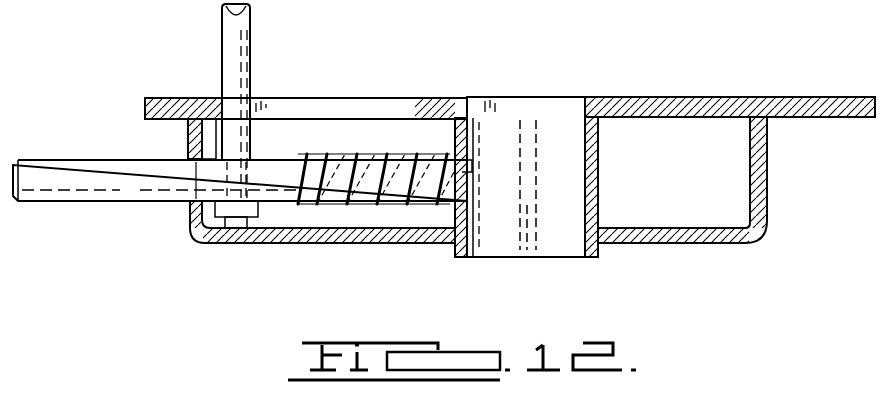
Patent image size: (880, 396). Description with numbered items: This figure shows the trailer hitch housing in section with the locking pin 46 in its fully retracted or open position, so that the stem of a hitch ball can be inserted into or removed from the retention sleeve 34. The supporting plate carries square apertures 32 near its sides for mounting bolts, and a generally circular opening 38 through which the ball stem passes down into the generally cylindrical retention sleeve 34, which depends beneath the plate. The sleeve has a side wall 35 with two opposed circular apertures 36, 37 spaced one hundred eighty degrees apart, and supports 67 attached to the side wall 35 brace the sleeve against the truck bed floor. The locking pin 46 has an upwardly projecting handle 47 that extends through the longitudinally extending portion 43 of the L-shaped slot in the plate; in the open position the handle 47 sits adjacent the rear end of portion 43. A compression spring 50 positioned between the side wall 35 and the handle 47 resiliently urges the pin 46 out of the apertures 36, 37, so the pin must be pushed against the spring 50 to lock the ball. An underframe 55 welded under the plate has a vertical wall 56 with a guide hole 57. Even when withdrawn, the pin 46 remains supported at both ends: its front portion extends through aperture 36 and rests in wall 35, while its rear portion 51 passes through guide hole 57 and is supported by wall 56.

The square apertures 32 is at (700, 97).
The retention sleeve 34 is at (597, 250).
The side wall 35 is at (598, 136).
The aperture 36 is at (468, 163).
The aperture 37 is at (590, 184).
The circular opening 38 is at (569, 103).
The longitudinally extending portion 43 is at (295, 106).
The locking pin 46 is at (110, 205).
The handle 47 is at (227, 31).
The compression spring 50 is at (386, 162).
The rear portion 51 is at (42, 205).
The underframe 55 is at (291, 243).
The vertical wall 56 is at (187, 136).
The guide hole 57 is at (180, 174).
The supports 67 is at (532, 216).